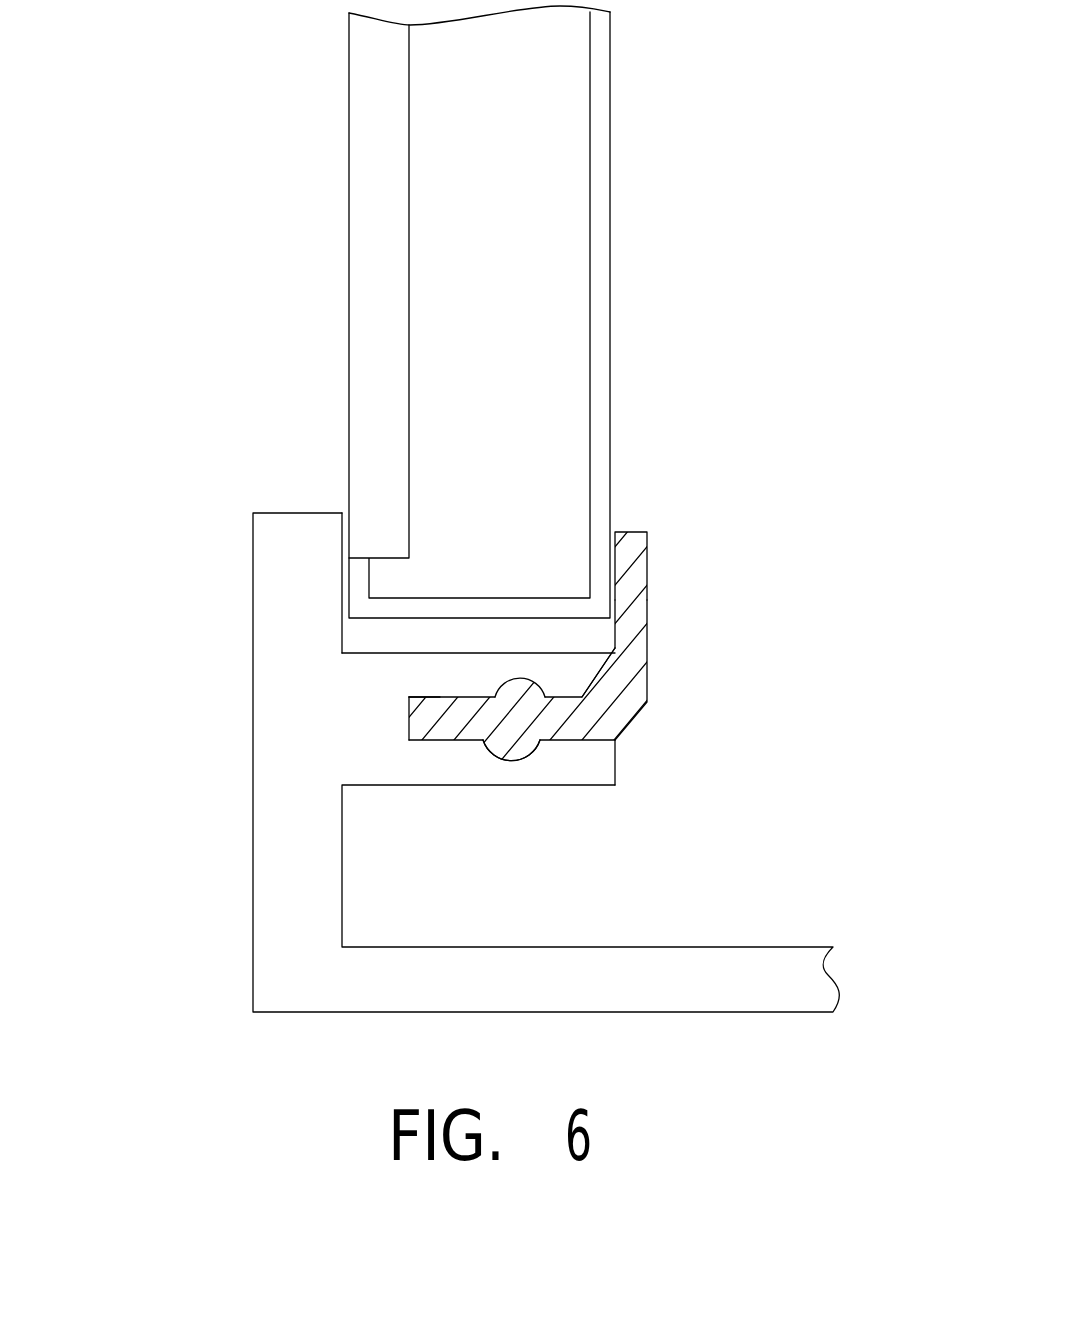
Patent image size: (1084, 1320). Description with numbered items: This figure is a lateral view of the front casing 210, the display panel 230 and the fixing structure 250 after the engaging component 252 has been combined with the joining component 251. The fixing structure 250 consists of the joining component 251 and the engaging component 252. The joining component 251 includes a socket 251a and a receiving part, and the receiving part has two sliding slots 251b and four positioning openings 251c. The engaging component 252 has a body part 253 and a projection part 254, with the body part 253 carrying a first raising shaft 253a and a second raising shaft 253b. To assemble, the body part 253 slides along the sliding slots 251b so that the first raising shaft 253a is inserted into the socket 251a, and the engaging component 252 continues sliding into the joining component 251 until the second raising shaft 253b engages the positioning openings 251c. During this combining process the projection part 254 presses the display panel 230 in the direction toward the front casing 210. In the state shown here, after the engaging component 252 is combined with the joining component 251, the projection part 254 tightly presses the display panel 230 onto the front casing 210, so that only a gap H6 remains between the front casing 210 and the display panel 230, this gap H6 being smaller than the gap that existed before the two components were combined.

The display panel 230 is at (349, 316).
The gap H6 is at (343, 511).
The front casing 210 is at (253, 790).
The fixing structure 250 is at (832, 652).
The projection part 254 is at (647, 563).
The engaging component 252 is at (647, 638).
The body part 253 is at (423, 740).
The first raising shaft 253a is at (409, 712).
The second raising shaft 253b is at (497, 758).
The joining component 251 is at (615, 774).
The socket 251a is at (408, 735).
The sliding slots 251b is at (582, 725).
The positioning openings 251c is at (497, 692).